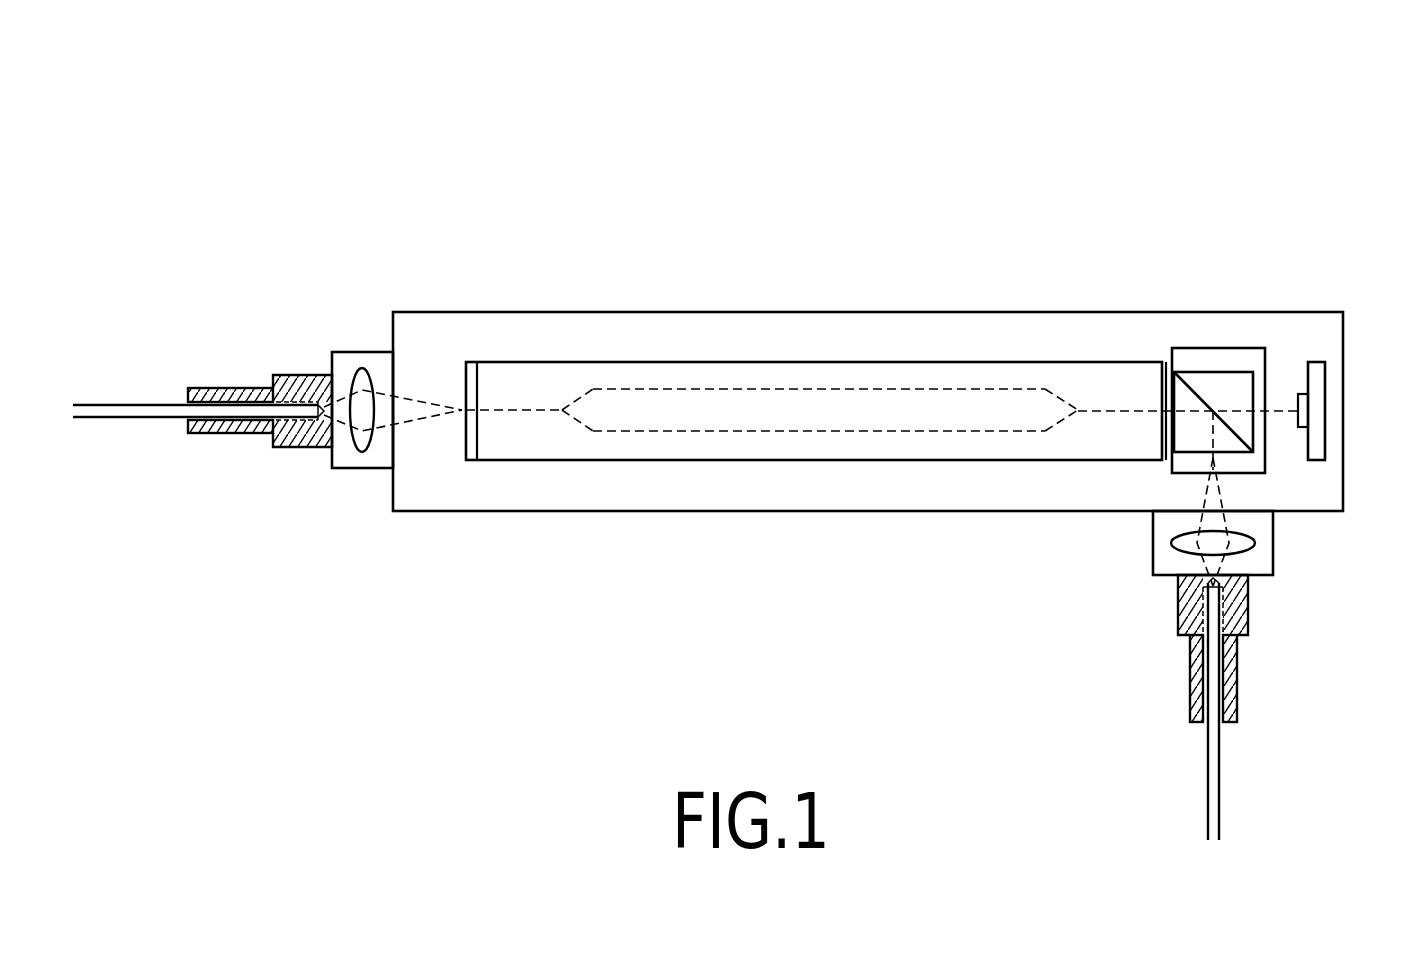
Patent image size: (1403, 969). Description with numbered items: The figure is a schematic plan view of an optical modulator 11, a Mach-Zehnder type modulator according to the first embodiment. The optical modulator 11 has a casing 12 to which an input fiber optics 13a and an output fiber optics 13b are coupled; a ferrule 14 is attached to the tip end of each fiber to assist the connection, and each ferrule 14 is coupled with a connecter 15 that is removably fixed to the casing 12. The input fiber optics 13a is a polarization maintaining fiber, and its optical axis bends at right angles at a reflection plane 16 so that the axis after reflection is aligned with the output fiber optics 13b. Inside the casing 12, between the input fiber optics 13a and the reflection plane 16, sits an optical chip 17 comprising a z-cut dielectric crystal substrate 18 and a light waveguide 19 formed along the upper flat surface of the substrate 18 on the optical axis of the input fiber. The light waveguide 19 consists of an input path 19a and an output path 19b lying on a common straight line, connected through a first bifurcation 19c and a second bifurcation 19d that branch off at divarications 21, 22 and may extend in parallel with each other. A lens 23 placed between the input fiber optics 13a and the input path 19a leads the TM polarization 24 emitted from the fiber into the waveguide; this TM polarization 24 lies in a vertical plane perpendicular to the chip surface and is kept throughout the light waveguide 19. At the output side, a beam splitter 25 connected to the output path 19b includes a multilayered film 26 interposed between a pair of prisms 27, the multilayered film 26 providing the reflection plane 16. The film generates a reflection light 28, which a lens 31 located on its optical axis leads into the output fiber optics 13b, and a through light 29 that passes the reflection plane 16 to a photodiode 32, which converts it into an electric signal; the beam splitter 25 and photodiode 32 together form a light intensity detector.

The optical modulator 11 is at (407, 242).
The casing 12 is at (393, 313).
The input fiber optics 13a is at (140, 405).
The output fiber optics 13b is at (1221, 772).
The ferrule 14 is at (225, 402).
The connecter 15 is at (296, 447).
The reflection plane 16 is at (1252, 453).
The optical chip 17 is at (535, 362).
The substrate 18 is at (532, 460).
The light waveguide 19 is at (815, 384).
The input path 19a is at (537, 397).
The output path 19b is at (1152, 410).
The first bifurcation 19c is at (710, 388).
The second bifurcation 19d is at (670, 432).
The divarication 21 is at (561, 411).
The divarication 22 is at (1079, 412).
The lens 23 is at (367, 453).
The TM polarization 24 is at (413, 422).
The beam splitter 25 is at (1245, 368).
The multilayered film 26 is at (1250, 442).
The prism 27 is at (1218, 368).
The reflection light 28 is at (1232, 494).
The through light 29 is at (1282, 408).
The lens 31 is at (1171, 543).
The photodiode 32 is at (1307, 393).